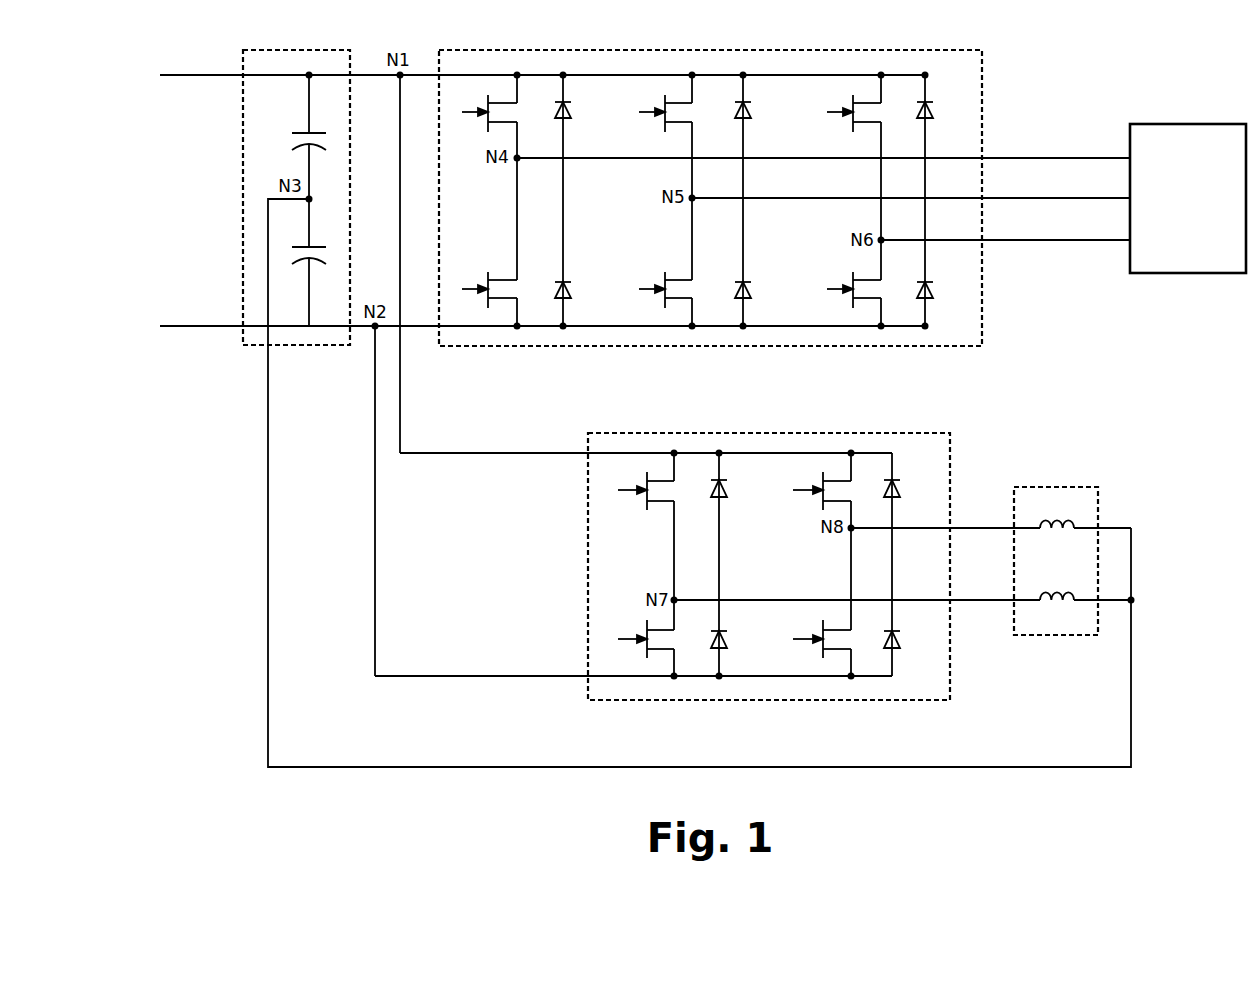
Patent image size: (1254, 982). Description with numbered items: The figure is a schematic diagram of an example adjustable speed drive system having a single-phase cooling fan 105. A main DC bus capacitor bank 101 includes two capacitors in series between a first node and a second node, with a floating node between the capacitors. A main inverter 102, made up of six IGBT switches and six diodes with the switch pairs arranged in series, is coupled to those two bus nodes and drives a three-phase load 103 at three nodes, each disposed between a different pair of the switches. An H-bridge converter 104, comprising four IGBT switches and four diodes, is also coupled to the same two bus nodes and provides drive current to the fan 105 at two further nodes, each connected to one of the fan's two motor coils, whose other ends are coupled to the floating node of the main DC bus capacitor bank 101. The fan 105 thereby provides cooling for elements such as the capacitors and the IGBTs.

The main DC bus capacitor bank 101 is at (243, 239).
The main inverter 102 is at (982, 98).
The load 103 is at (1188, 198).
The H-bridge converter 104 is at (588, 562).
The fan 105 is at (1057, 485).